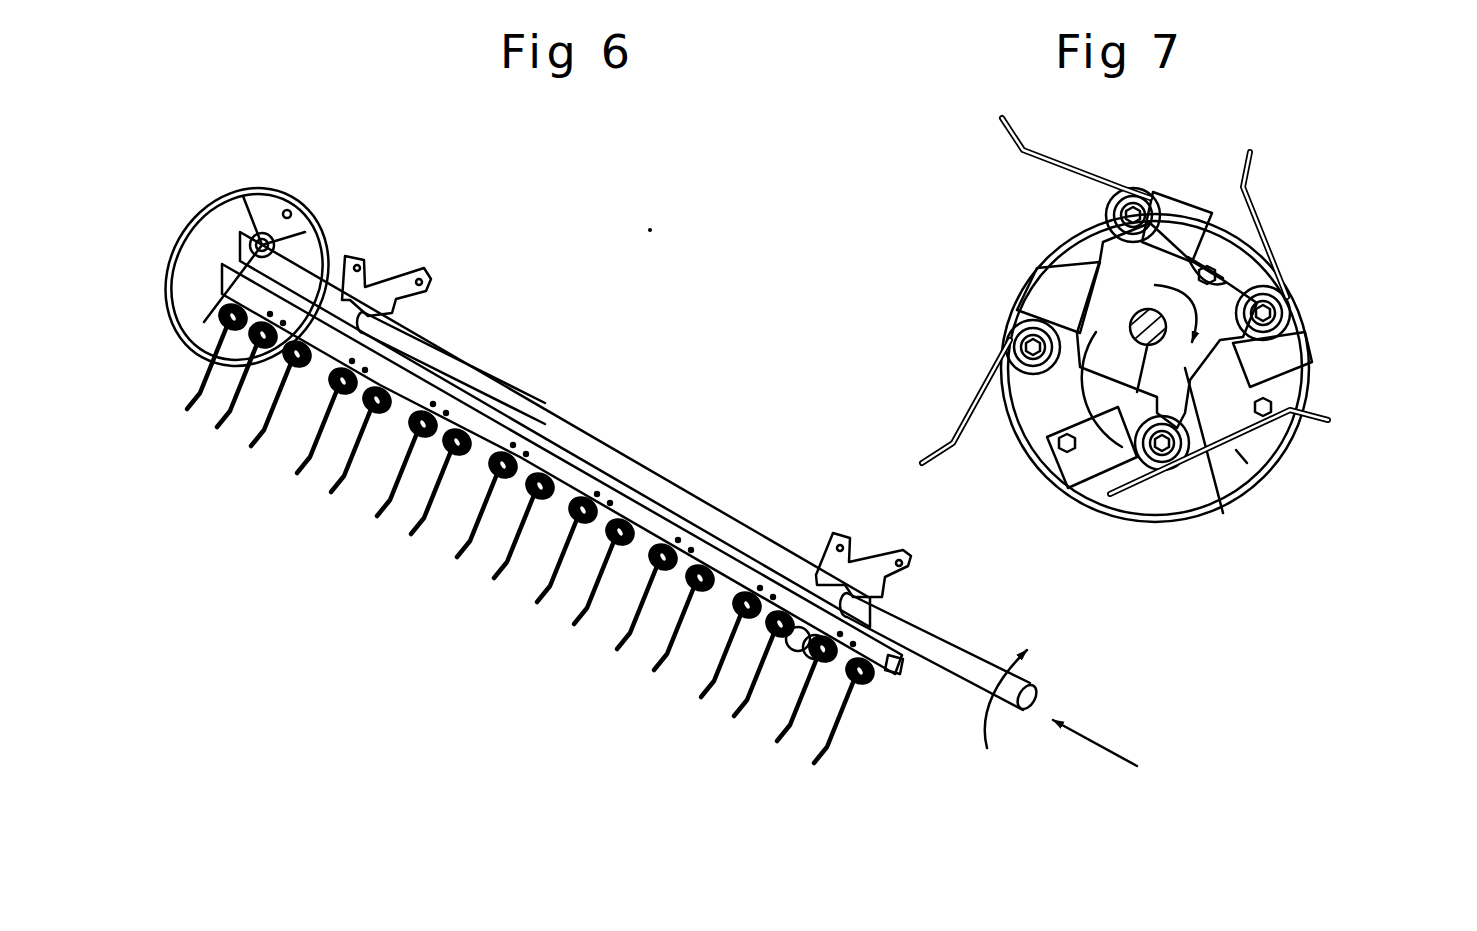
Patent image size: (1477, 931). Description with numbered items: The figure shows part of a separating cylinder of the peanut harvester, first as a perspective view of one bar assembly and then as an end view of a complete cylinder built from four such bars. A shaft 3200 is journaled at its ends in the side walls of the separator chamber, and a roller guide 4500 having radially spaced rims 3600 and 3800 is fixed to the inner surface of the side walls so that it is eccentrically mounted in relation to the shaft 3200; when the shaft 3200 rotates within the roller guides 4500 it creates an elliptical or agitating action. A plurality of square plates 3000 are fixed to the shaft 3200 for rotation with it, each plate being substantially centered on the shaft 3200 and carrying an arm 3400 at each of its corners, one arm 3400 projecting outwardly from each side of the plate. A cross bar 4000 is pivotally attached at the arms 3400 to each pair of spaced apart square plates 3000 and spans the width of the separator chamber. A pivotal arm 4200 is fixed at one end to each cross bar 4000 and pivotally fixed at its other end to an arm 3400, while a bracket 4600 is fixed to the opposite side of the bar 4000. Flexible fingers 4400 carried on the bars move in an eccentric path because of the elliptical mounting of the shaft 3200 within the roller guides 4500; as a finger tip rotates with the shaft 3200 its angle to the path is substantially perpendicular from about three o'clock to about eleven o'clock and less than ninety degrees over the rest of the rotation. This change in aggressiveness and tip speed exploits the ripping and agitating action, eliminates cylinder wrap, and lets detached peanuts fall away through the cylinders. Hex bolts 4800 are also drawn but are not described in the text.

In FIG. 6, the square plate 3000 is at (410, 310).
In FIG. 7, the square plate 3000 is at (1247, 463).
In FIG. 6, the shaft 3200 is at (593, 430).
In FIG. 7, the shaft 3200 is at (1133, 307).
In FIG. 6, the arm 3400 is at (430, 262).
In FIG. 7, the arm 3400 is at (1115, 250).
In FIG. 6, the rim 3600 is at (303, 240).
In FIG. 7, the rim 3600 is at (1067, 388).
In FIG. 6, the rim 3800 is at (178, 335).
In FIG. 7, the rim 3800 is at (1153, 533).
In FIG. 6, the cross bar 4000 is at (888, 680).
In FIG. 7, the cross bar 4000 is at (1190, 200).
In FIG. 6, the pivotal arm 4200 is at (303, 387).
In FIG. 7, the pivotal arm 4200 is at (1142, 178).
In FIG. 6, the flexible finger 4400 is at (293, 475).
In FIG. 7, the flexible finger 4400 is at (997, 123).
In FIG. 6, the roller guide 4500 is at (212, 213).
In FIG. 7, the roller guide 4500 is at (1158, 507).
In FIG. 6, the bracket 4600 is at (268, 238).
In FIG. 7, the bracket 4600 is at (1070, 253).
In FIG. 6, the bolt 4800 is at (287, 210).
In FIG. 7, the bolt 4800 is at (1220, 237).